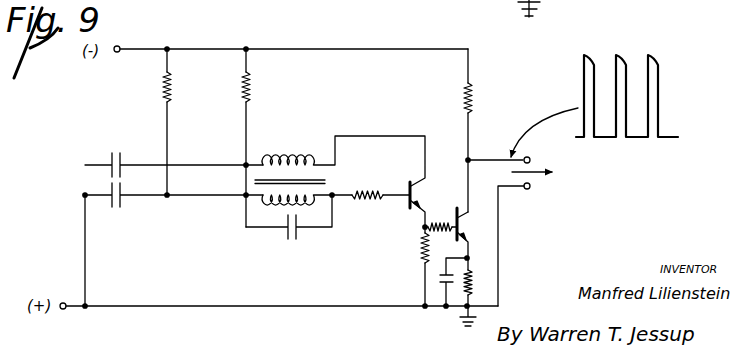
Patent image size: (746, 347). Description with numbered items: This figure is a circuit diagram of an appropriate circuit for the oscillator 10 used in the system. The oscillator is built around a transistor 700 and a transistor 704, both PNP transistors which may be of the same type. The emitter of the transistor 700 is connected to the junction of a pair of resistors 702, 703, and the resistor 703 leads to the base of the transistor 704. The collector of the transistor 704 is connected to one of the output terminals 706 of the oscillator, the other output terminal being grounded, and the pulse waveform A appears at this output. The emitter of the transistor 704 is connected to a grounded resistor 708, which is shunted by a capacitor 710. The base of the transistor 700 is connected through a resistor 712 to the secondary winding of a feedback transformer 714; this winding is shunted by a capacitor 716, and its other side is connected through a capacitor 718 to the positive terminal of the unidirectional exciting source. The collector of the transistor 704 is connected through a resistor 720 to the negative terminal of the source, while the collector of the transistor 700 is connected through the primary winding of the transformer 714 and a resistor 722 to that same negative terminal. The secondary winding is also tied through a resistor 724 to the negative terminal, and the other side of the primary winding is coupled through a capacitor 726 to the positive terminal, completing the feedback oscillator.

The oscillator 10 is at (366, 32).
The transistor 700 is at (409, 183).
The resistor 702 is at (430, 219).
The resistor 703 is at (423, 245).
The transistor 704 is at (456, 211).
The output terminals 706 is at (530, 158).
The grounded resistor 708 is at (471, 273).
The capacitor 710 is at (439, 275).
The resistor 712 is at (378, 192).
The feedback transformer 714 is at (245, 182).
The capacitor 716 is at (300, 232).
The capacitor 718 is at (121, 205).
The resistor 720 is at (471, 100).
The resistor 722 is at (244, 98).
The resistor 724 is at (165, 98).
The capacitor 726 is at (134, 142).
The output pulse waveform A is at (658, 97).